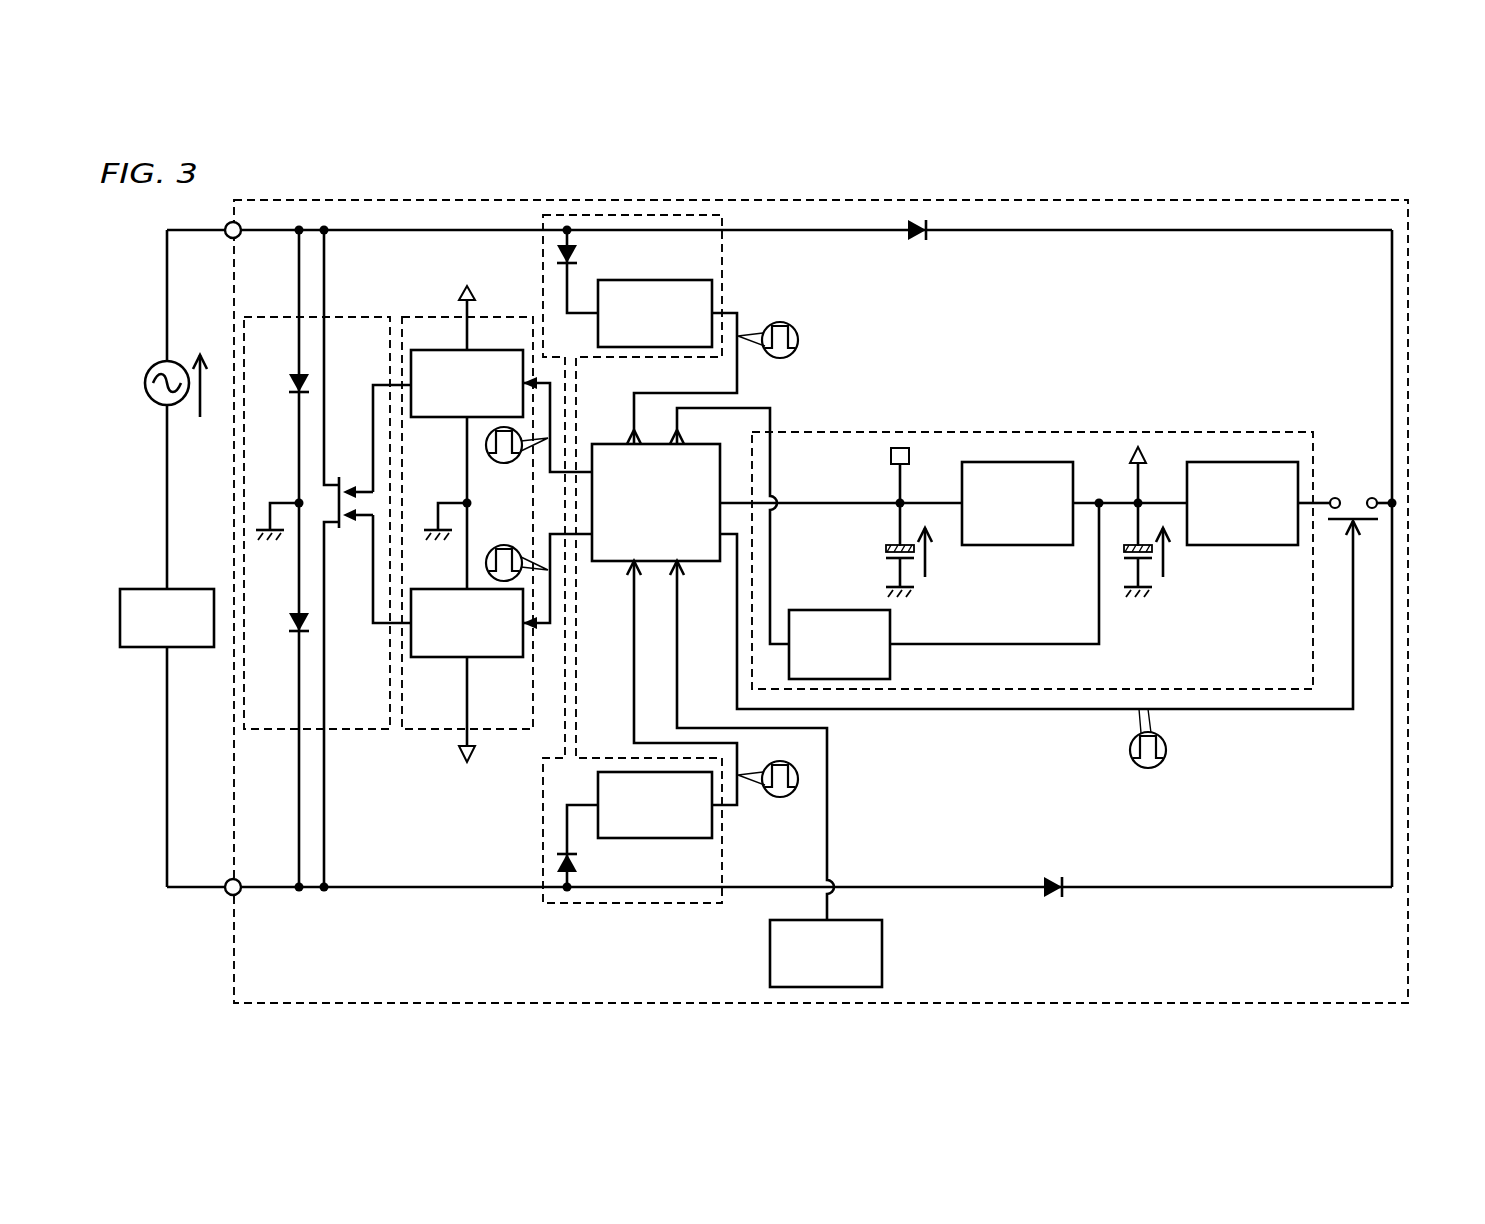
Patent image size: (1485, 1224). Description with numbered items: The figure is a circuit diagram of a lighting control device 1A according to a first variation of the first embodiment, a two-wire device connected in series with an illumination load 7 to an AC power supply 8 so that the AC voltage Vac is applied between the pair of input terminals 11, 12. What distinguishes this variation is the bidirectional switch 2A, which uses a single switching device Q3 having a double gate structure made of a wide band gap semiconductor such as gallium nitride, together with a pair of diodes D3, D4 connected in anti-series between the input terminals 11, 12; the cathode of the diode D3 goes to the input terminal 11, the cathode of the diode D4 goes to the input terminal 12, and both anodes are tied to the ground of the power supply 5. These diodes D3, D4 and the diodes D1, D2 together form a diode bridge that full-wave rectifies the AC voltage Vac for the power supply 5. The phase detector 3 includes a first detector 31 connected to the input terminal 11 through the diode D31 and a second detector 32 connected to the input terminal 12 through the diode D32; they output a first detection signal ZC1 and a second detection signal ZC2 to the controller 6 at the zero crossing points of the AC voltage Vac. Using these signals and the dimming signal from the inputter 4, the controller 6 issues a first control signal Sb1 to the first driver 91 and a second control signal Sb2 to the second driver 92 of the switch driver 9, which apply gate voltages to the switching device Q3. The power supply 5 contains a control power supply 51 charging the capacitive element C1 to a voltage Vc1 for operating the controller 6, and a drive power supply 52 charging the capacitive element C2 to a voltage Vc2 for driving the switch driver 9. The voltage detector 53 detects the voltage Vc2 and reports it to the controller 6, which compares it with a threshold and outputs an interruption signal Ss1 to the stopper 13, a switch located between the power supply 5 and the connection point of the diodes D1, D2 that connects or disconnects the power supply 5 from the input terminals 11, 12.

The lighting control device 1A is at (1411, 204).
The bidirectional switch 2A is at (317, 559).
The phase detector 3 is at (648, 559).
The first detector 31 is at (674, 280).
The second detector 32 is at (674, 840).
The inputter 4 is at (882, 952).
The power supply 5 is at (1032, 538).
The control power supply 51 is at (1022, 546).
The drive power supply 52 is at (1278, 546).
The voltage detector 53 is at (818, 610).
The controller 6 is at (612, 443).
The load 7 is at (150, 588).
The AC power supply 8 is at (157, 367).
The switch driver 9 is at (467, 517).
The first driver 91 is at (443, 419).
The second driver 92 is at (445, 587).
The input terminal 11 is at (227, 225).
The input terminal 12 is at (227, 895).
The stopper 13 is at (1353, 499).
The switching device Q3 is at (348, 558).
The diode D1 is at (917, 247).
The diode D2 is at (1055, 871).
The diode D3 is at (283, 384).
The diode D4 is at (283, 623).
The diode D31 is at (589, 256).
The diode D32 is at (589, 863).
The capacitive element C1 is at (896, 522).
The capacitive element C2 is at (1135, 522).
The AC voltage Vac is at (198, 371).
The voltage of capacitive element C1 Vc1 is at (946, 555).
The voltage of capacitive element C2 Vc2 is at (1184, 555).
The first control signal Sb1 is at (537, 437).
The second control signal Sb2 is at (537, 572).
The interruption signal Ss1 is at (1040, 662).
The first detection signal ZC1 is at (712, 378).
The second detection signal ZC2 is at (713, 698).